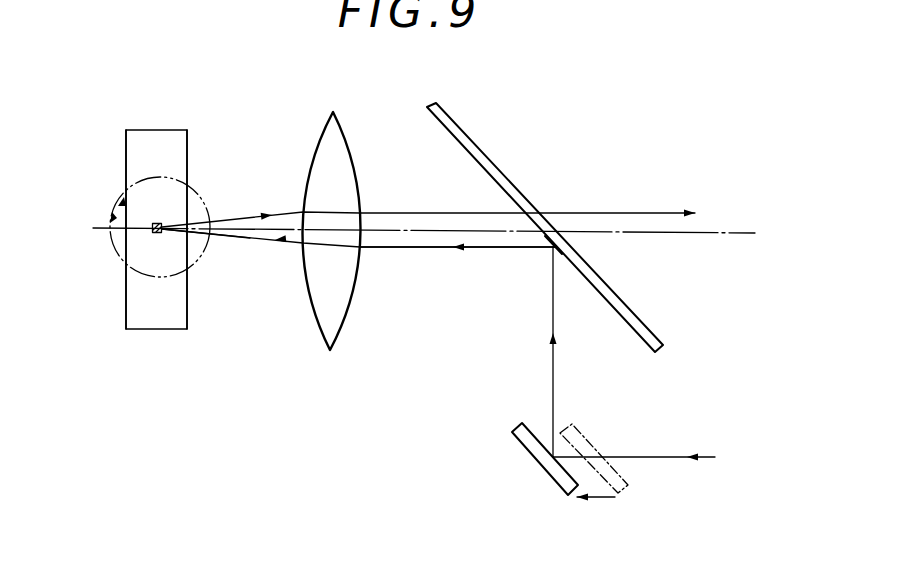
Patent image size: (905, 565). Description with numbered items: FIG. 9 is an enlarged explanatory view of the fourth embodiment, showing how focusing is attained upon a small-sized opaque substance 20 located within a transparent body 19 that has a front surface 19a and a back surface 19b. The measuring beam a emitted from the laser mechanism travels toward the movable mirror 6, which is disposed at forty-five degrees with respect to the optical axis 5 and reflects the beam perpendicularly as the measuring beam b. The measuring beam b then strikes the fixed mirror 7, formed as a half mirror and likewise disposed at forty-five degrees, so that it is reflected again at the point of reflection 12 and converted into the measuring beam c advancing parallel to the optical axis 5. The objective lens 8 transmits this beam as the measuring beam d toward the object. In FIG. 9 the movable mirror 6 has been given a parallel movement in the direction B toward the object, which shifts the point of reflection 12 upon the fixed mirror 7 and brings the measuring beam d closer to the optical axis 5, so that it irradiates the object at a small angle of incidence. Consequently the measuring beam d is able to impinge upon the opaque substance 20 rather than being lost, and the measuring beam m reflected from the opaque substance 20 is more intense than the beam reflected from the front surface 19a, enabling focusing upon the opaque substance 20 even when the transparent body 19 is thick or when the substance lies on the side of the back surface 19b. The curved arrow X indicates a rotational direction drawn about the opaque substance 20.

The optical axis 5 is at (703, 233).
The movable mirror 6 is at (549, 472).
The fixed mirror 7 is at (455, 125).
The objective lens 8 is at (328, 116).
The point of reflection 12 is at (563, 246).
The transparent body 19 is at (172, 130).
The front surface 19a is at (187, 307).
The back surface 19b is at (126, 325).
The opaque substance 20 is at (158, 237).
The rotation direction X is at (118, 207).
The measuring beam m is at (253, 213).
The measuring beam d is at (292, 247).
The measuring beam c is at (421, 250).
The measuring beam b is at (552, 370).
The measuring beam a is at (653, 457).
The direction B is at (603, 497).